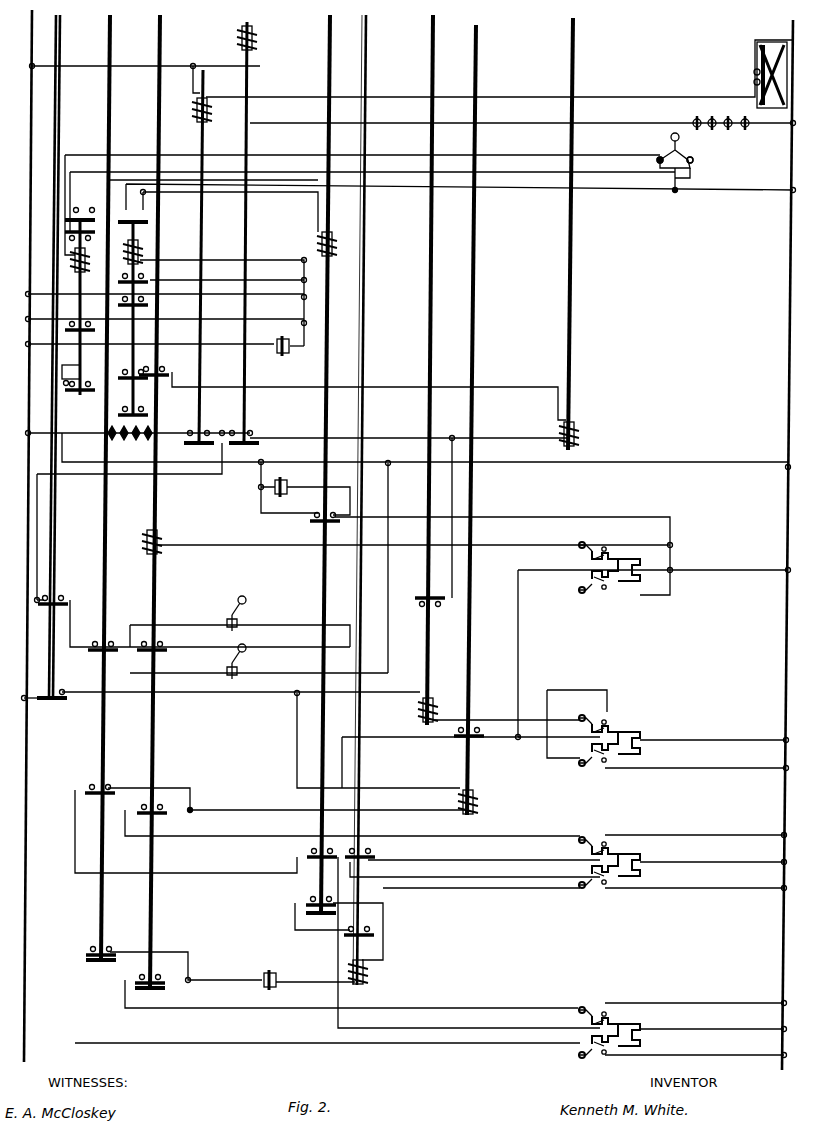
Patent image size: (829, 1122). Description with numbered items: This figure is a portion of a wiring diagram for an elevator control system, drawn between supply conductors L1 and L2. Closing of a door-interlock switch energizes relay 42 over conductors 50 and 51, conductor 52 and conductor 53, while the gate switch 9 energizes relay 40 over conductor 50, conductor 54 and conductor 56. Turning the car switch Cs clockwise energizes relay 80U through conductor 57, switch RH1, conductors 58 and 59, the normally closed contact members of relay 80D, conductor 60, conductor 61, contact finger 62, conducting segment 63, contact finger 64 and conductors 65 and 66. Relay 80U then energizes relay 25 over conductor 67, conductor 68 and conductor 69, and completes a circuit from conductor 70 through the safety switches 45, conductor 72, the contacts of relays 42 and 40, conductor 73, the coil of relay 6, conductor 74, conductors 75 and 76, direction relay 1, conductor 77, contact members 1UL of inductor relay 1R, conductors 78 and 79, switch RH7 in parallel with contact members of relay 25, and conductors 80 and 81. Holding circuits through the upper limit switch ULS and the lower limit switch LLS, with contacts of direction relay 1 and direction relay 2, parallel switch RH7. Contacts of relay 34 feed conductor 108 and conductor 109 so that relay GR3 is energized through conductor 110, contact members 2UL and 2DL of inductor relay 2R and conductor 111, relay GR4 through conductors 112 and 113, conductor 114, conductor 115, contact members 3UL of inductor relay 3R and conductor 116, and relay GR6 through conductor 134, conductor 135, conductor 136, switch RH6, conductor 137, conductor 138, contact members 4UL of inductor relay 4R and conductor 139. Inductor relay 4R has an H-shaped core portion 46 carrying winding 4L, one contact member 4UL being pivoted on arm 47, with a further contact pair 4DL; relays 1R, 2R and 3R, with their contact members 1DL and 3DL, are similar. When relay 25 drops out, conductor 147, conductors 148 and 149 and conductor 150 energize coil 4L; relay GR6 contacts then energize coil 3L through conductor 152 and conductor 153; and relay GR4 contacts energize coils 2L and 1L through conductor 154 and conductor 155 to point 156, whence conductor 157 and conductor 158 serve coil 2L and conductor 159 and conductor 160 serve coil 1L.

The supply conductor L1 is at (30, 1022).
The supply conductor L2 is at (790, 28).
The relay 34 is at (63, 63).
The direction relay 2 is at (108, 487).
The direction relay 1 is at (156, 501).
The relay 42 is at (206, 256).
The relay 40 is at (251, 232).
The relay 25 is at (331, 464).
The relay GR6 is at (375, 500).
The relay GR3 is at (442, 370).
The relay GR4 is at (485, 420).
The relay 6 is at (573, 404).
The conductor 50 is at (178, 70).
The conductor 51 is at (208, 79).
The conductor 54 is at (499, 68).
The conductor 56 is at (755, 48).
The contacts 9 is at (748, 79).
The conductor 52 is at (523, 114).
The conductor 53 is at (768, 120).
The conductor 61 is at (362, 196).
The car switch Cs is at (667, 150).
The contact finger 62 is at (652, 157).
The conducting segment 63 is at (702, 153).
The contact finger 64 is at (670, 178).
The conductor 65 is at (692, 185).
The conductor 66 is at (140, 168).
The conductor 68 is at (292, 192).
The conductor 69 is at (80, 293).
The relay 80U is at (89, 325).
The conductor 60 is at (125, 280).
The relay 80D is at (137, 315).
The conductor 75 is at (71, 375).
The conductor 67 is at (262, 262).
The conductor 59 is at (228, 273).
The conductor 58 is at (292, 306).
The conductor 57 is at (42, 350).
The switch RH1 is at (285, 340).
The conductor 70 is at (36, 433).
The safety switches 45 is at (156, 442).
The conductor 72 is at (186, 434).
The conductor 74 is at (352, 394).
The conductor 73 is at (409, 510).
The conductor 76 is at (66, 464).
The conductor 81 is at (760, 468).
The conductor 80 is at (260, 487).
The switch RH7 is at (311, 488).
The conductor 77 is at (361, 540).
The conductor 79 is at (637, 522).
The conductor 78 is at (626, 536).
The conductor 160 is at (654, 645).
The contact members 1UL is at (598, 561).
The energizing winding 1L is at (628, 560).
The stopping inductor relay 1R is at (652, 586).
The limit switch 1DL is at (576, 594).
The conductor 108 is at (30, 690).
The conductor 109 is at (240, 686).
The lower limit switch LLS is at (240, 621).
The upper limit switch ULS is at (259, 661).
The conductor 112 is at (295, 738).
The conductor 154 is at (373, 742).
The conductor 155 is at (537, 745).
The point 156 is at (507, 759).
The conductor 159 is at (518, 664).
The conductor 110 is at (516, 718).
The conductor 157 is at (561, 747).
The contact members 2UL is at (537, 734).
The energizing winding 2L is at (625, 735).
The conductor 158 is at (714, 734).
The stopping inductor relay 2R is at (652, 758).
The conductor 111 is at (697, 759).
The contact members 2DL is at (557, 774).
The conductor 114 is at (276, 799).
The conductor 113 is at (412, 792).
The conductor 115 is at (352, 823).
The conductor 147 is at (186, 831).
The conductor 152 is at (484, 851).
The conductor 148 is at (475, 871).
The contact members 3UL is at (594, 855).
The conductor 116 is at (696, 827).
The energizing winding 3L is at (625, 857).
The conductor 153 is at (713, 855).
The stopping inductor relay 3R is at (652, 880).
The limit switch 3DL is at (585, 893).
The conductor 134 is at (292, 903).
The conductor 135 is at (383, 905).
The conductor 149 is at (338, 1000).
The conductor 137 is at (174, 965).
The switch RH6 is at (270, 976).
The conductor 136 is at (298, 984).
The conductor 138 is at (351, 994).
The contact members 4UL is at (357, 1025).
The conductor 139 is at (696, 995).
The arm 47 is at (582, 1016).
The energizing winding 4L is at (625, 1024).
The conductor 150 is at (713, 1020).
The magnetic core portion 46 is at (640, 1040).
The stopping inductor relay 4R is at (645, 1048).
The contact members 4DL is at (557, 1064).